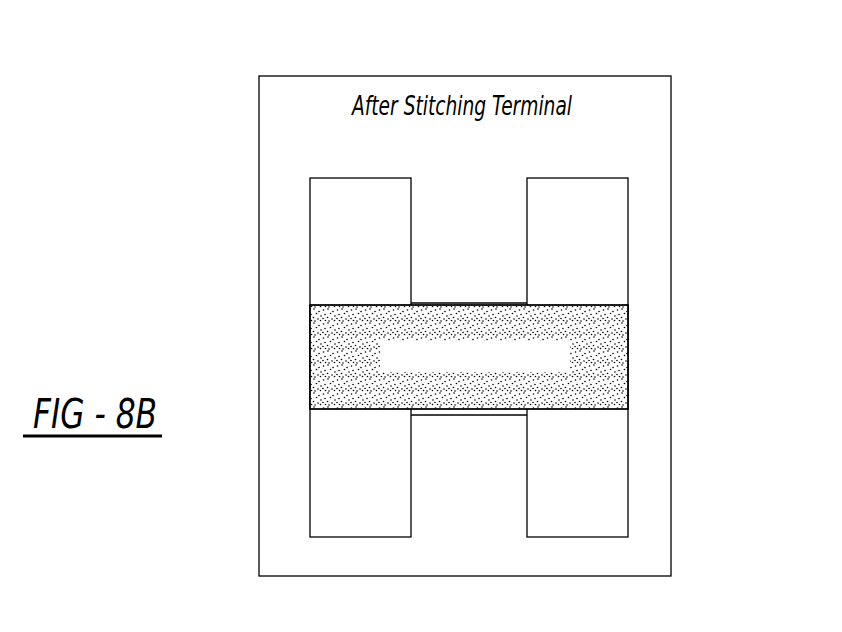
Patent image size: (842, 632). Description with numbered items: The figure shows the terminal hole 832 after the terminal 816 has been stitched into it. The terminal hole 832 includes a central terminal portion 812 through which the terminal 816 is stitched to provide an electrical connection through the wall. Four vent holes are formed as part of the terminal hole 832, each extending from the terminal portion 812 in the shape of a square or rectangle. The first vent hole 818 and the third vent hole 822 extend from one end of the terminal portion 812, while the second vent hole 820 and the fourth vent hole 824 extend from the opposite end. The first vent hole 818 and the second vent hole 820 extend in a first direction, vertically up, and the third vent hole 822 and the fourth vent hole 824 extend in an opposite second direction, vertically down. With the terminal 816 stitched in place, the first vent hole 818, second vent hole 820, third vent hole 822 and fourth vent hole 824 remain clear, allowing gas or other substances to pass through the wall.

The terminal portion 812 is at (310, 292).
The terminal 816 is at (368, 325).
The first vent hole 818 is at (359, 192).
The second vent hole 820 is at (612, 220).
The third vent hole 822 is at (368, 520).
The fourth vent hole 824 is at (582, 523).
The terminal hole 832 is at (642, 362).